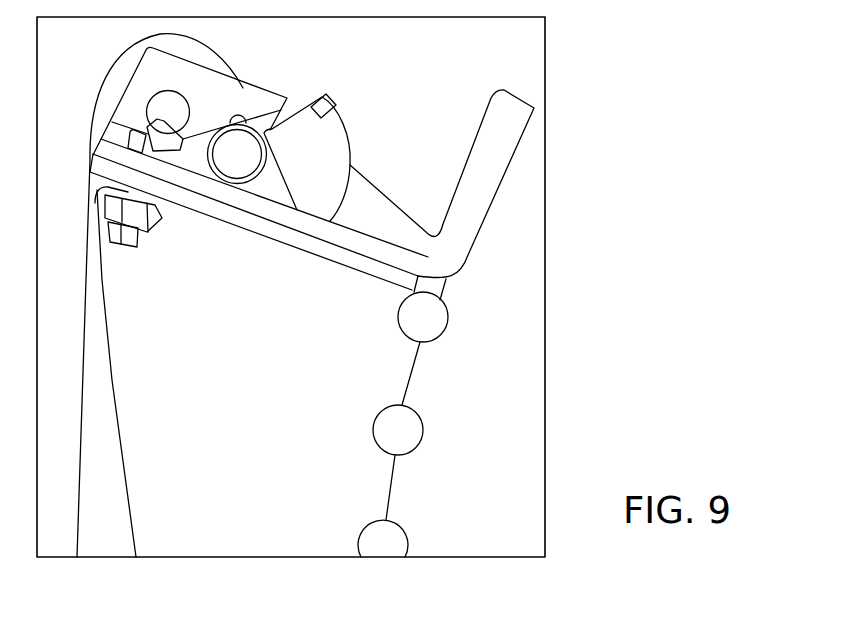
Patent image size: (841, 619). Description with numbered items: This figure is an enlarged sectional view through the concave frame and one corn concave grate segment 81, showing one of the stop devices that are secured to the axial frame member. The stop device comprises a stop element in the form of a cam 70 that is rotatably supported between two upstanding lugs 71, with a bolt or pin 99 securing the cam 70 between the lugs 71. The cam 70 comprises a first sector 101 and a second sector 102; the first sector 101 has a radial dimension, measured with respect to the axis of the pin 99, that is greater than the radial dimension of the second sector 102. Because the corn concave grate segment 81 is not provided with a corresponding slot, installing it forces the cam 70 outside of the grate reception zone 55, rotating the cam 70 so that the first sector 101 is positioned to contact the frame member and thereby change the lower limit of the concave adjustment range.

The grate reception zone 55 is at (287, 354).
The cam 70 is at (333, 140).
The upstanding lugs 71 is at (276, 188).
The corn concave grate segment 81 is at (177, 528).
The pin 99 is at (238, 165).
The first sector 101 is at (326, 157).
The second sector 102 is at (270, 130).